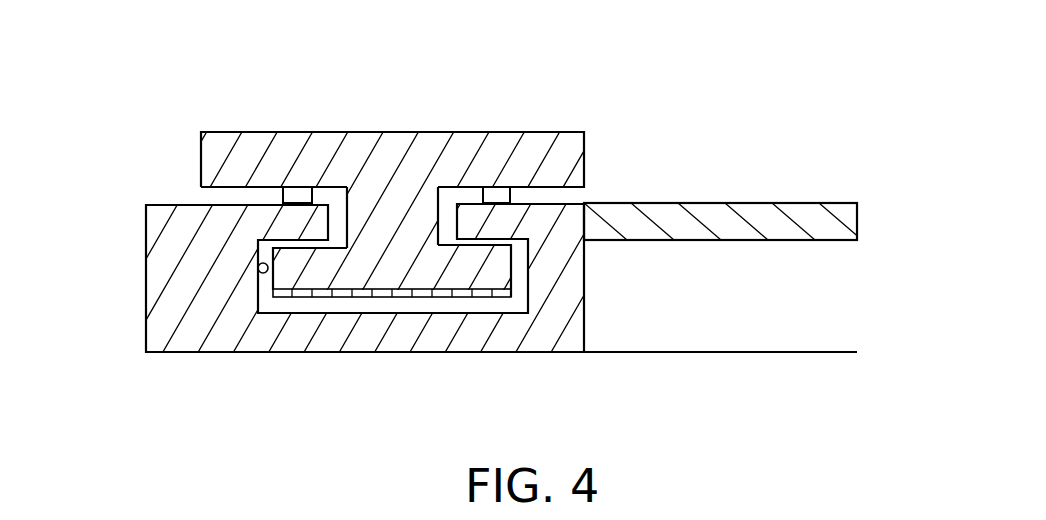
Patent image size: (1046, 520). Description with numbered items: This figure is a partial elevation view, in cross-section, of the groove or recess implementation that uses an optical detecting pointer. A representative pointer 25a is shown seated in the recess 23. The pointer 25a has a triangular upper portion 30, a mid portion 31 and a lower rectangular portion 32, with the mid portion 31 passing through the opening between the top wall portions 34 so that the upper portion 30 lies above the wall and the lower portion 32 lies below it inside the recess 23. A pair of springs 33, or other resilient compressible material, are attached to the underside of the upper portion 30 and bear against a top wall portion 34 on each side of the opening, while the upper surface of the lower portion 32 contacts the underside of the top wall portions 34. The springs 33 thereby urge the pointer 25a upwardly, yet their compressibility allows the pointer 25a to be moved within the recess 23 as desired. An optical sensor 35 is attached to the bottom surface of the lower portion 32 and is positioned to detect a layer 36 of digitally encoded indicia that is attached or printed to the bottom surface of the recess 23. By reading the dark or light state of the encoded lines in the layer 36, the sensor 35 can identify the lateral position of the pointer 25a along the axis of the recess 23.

The recess 23 is at (258, 268).
The pointer 25a is at (585, 97).
The upper portion 30 is at (321, 141).
The mid portion 31 is at (414, 168).
The lower portion 32 is at (368, 270).
The springs 33 is at (291, 191).
The top wall portion 34 is at (284, 222).
The optical sensor 35 is at (448, 292).
The layer of digitally encoded indicia 36 is at (412, 302).